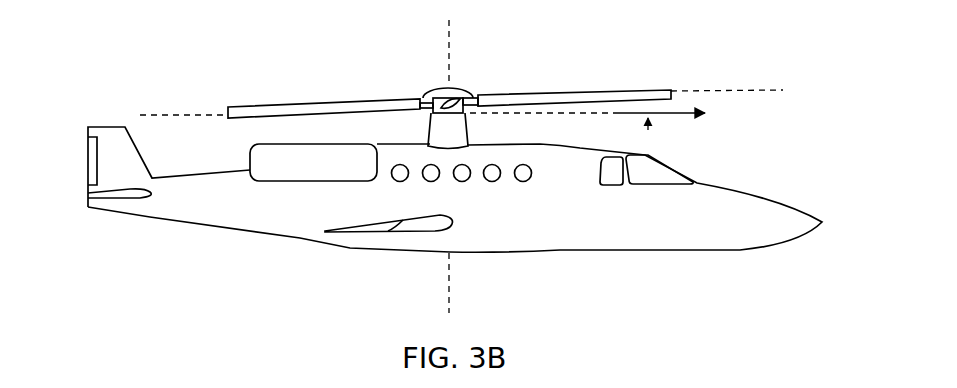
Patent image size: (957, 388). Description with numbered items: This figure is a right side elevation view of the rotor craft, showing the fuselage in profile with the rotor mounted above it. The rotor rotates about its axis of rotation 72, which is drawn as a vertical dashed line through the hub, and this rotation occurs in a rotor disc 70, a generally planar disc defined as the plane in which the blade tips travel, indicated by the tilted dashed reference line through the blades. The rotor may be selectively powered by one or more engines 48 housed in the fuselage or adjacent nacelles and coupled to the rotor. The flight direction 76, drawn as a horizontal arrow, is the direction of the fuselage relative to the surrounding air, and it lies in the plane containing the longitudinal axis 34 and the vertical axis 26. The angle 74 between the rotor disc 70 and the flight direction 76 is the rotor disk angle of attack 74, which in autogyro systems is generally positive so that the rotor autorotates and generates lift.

The longitudinal axis 34 is at (857, 223).
The engine 48 is at (297, 107).
The angle of attack 74 is at (641, 88).
The rotor disc 70 is at (755, 89).
The axis of rotation 72 is at (452, 37).
The flight direction 76 is at (676, 114).
The vertical axis 26 is at (452, 283).